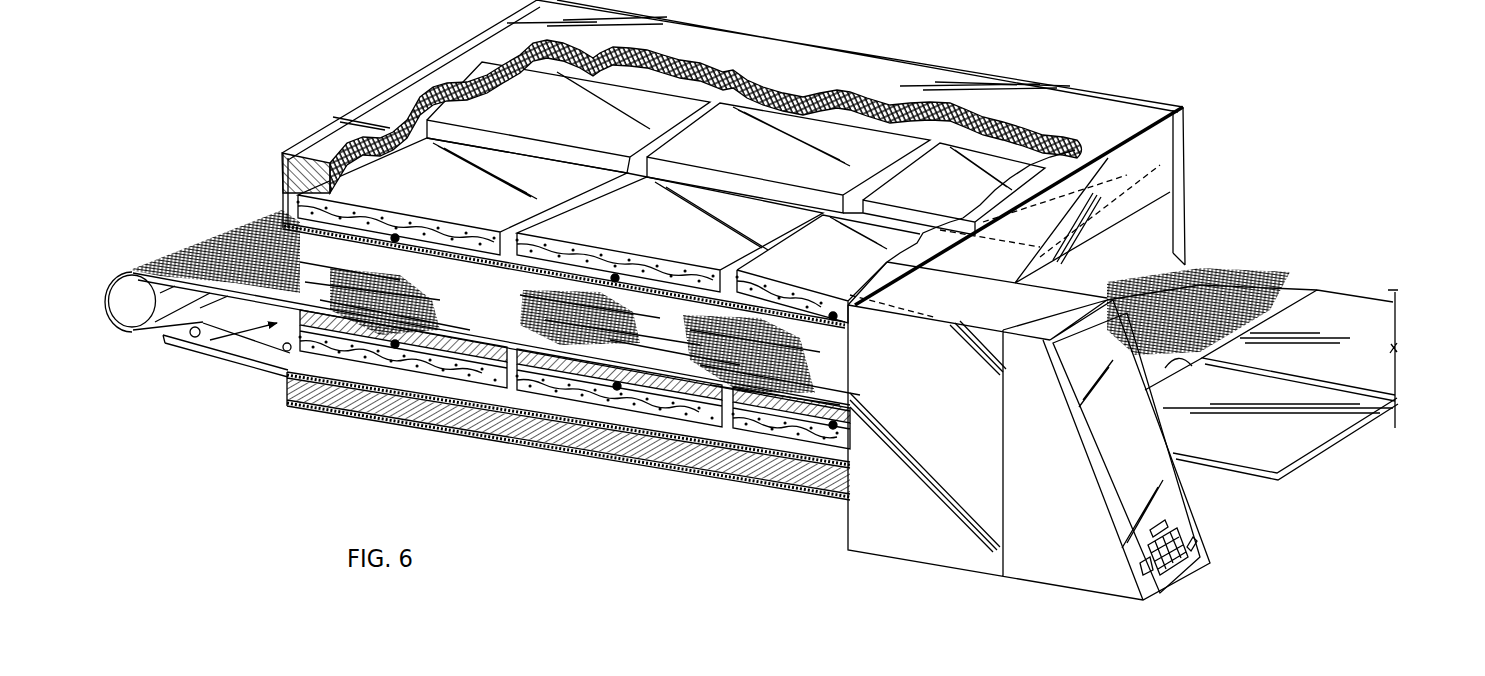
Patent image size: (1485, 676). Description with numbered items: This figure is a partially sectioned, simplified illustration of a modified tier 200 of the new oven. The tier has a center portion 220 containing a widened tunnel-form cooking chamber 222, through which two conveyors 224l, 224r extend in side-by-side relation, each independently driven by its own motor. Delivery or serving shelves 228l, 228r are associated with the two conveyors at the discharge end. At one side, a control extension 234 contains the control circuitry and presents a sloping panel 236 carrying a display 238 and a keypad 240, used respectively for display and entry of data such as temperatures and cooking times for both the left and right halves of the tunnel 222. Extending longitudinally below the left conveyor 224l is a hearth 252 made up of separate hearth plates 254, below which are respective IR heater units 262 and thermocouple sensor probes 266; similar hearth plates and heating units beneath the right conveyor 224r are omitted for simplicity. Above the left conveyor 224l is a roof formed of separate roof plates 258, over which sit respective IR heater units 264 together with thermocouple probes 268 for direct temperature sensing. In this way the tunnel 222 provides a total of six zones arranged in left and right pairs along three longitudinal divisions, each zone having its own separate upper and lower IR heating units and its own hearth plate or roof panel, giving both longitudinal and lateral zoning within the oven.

The modified tier 200 is at (1207, 134).
The center portion 220 is at (855, 56).
The tunnel-form cooking chamber 222 is at (1158, 227).
The conveyor 224r is at (278, 188).
The conveyor 224l is at (197, 223).
The delivery or serving shelf 228r is at (1347, 290).
The delivery or serving shelf 228l is at (1253, 460).
The control extension 234 is at (933, 557).
The sloping panel 236 is at (1170, 490).
The display 238 is at (1167, 523).
The keypad 240 is at (1167, 558).
The hearth 252 is at (230, 303).
The hearth plates 254 is at (763, 480).
The roof plates 258 is at (775, 298).
The IR heater units 262 is at (717, 468).
The IR heater units 264 is at (957, 191).
The thermocouple sensor probes 266 is at (817, 487).
The thermocouple probes 268 is at (833, 318).